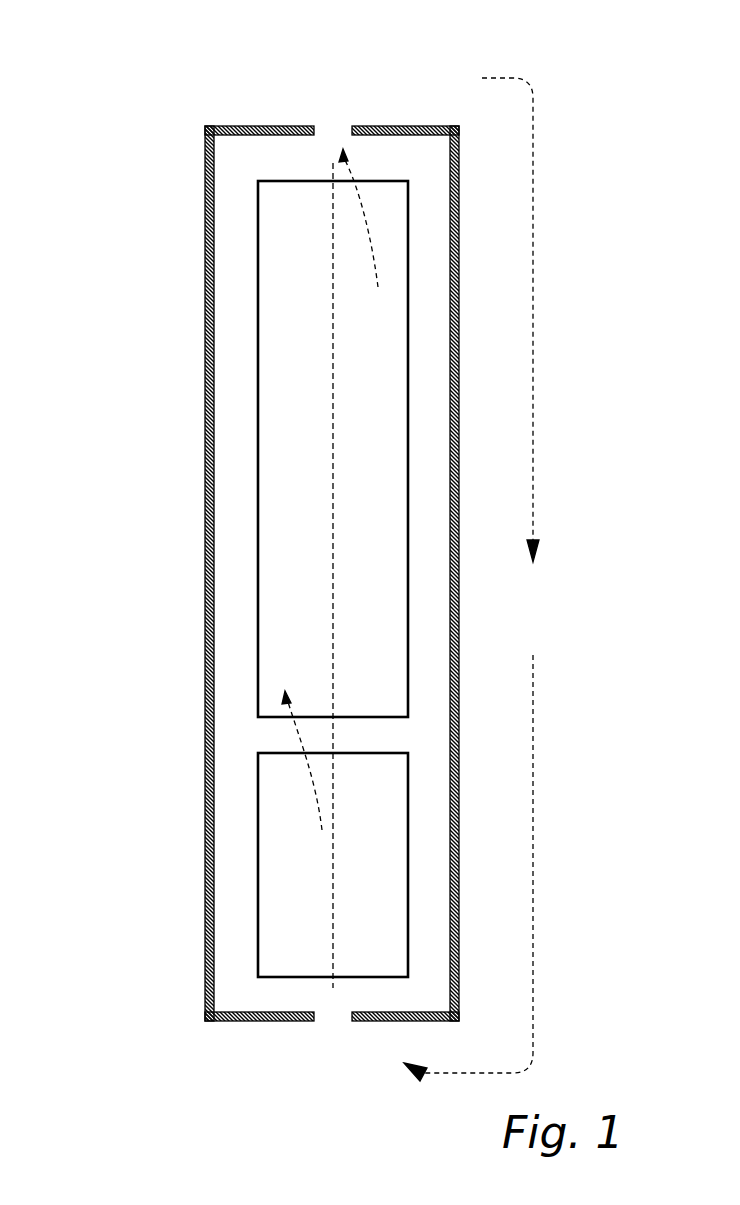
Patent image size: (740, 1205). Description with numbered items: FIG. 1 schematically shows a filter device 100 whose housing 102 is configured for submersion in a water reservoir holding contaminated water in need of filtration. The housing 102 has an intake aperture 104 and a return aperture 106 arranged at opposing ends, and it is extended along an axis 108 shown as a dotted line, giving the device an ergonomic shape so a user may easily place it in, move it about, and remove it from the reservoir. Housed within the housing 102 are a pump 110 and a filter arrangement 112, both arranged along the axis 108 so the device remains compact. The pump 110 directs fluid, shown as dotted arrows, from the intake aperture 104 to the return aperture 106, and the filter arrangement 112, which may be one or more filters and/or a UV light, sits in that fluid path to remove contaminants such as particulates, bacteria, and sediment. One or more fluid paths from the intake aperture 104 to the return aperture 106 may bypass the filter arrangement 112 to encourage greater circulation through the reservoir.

The filter device 100 is at (182, 78).
The housing 102 is at (205, 240).
The intake aperture 104 is at (328, 1019).
The return aperture 106 is at (335, 130).
The axis 108 is at (333, 472).
The pump 110 is at (310, 814).
The filter arrangement 112 is at (313, 227).